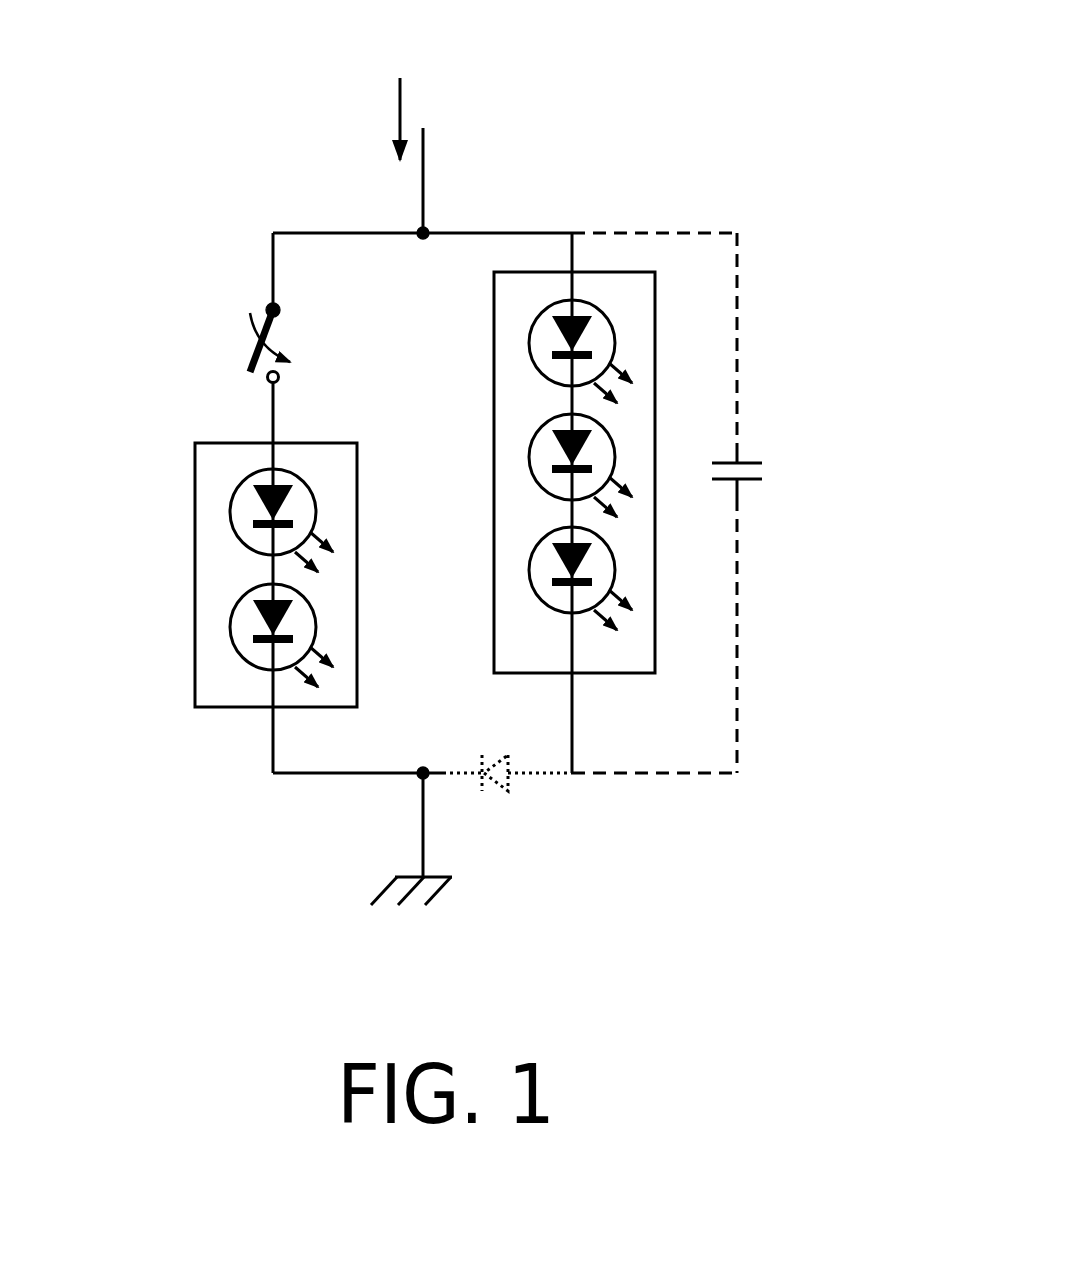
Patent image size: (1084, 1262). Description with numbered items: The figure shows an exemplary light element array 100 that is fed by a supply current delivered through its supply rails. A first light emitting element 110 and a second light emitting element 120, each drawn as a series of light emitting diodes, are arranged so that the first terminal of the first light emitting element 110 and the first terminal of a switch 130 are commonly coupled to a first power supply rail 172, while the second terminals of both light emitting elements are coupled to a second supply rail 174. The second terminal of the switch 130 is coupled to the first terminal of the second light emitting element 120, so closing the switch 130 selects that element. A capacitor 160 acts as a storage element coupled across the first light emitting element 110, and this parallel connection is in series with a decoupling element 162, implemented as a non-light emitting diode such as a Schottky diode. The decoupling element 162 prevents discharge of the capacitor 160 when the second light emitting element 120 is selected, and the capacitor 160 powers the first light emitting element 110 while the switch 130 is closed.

The light element array 100 is at (487, 457).
The first light emitting element 110 is at (481, 391).
The second light emitting element 120 is at (176, 612).
The switch 130 is at (220, 353).
The capacitor 160 is at (760, 470).
The decoupling element 162 is at (493, 782).
The first power supply rail 172 is at (515, 201).
The second supply rail 174 is at (402, 837).